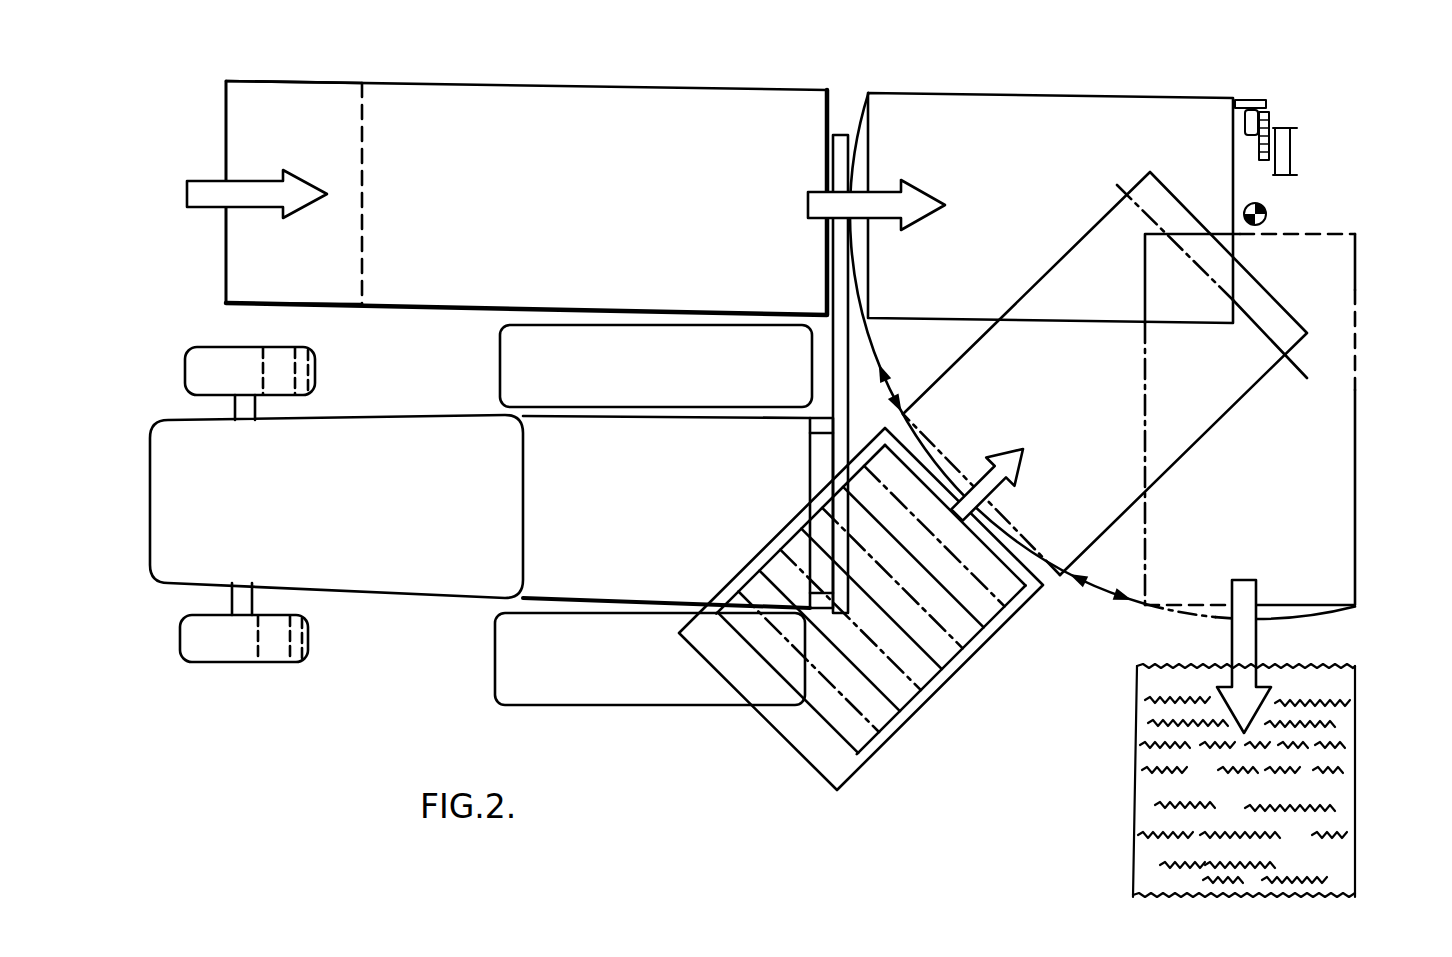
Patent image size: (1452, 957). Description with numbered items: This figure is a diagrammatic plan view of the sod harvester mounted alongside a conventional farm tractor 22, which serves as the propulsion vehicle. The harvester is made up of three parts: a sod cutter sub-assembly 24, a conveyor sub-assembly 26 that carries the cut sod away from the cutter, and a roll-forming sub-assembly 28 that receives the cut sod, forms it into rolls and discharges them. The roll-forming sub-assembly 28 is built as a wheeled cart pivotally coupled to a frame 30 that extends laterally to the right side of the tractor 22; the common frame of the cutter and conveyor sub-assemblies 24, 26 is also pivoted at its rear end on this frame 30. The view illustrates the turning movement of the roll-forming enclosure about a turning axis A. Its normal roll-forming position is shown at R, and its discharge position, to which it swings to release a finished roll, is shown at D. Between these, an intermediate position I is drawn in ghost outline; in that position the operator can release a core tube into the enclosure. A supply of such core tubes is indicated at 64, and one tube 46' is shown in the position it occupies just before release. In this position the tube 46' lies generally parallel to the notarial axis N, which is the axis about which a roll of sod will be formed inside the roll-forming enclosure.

The farm tractor 22 is at (455, 623).
The sod cutter sub-assembly 24 is at (310, 76).
The conveyor sub-assembly 26 is at (573, 80).
The roll-forming sub-assembly 28 is at (977, 90).
The frame 30 is at (860, 401).
The core tube 46' is at (894, 599).
The core tube supply 64 is at (944, 708).
The roll-forming position R is at (1155, 90).
The turning axis A is at (1267, 212).
The notarial axis N is at (1257, 327).
The intermediate position I is at (1255, 404).
The discharge position D is at (1372, 564).